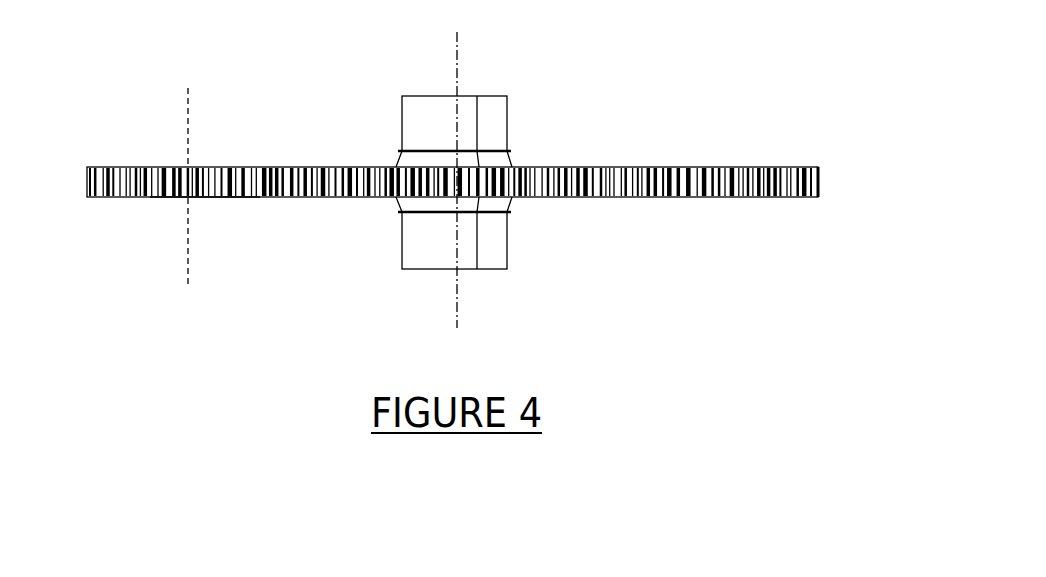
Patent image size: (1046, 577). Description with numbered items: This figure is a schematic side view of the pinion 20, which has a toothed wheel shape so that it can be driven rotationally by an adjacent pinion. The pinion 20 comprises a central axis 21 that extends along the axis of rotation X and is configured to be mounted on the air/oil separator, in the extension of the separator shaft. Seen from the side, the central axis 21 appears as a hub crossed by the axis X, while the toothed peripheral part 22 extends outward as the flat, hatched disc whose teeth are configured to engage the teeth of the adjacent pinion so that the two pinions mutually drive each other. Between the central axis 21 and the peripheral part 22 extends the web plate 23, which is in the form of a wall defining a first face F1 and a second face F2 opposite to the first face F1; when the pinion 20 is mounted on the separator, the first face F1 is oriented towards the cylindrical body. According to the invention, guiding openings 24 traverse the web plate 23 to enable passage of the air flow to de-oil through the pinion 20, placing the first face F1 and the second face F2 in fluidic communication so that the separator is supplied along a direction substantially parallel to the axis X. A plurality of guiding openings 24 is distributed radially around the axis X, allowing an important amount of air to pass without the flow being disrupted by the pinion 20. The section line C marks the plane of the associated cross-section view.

The pinion 20 is at (545, 67).
The central axis 21 is at (505, 240).
The toothed peripheral part 22 is at (335, 167).
The web plate 23 is at (820, 181).
The guiding openings 24 is at (204, 211).
The first face F1 is at (742, 160).
The second face F2 is at (761, 211).
The axis of rotation X is at (458, 181).
The section line C is at (183, 95).